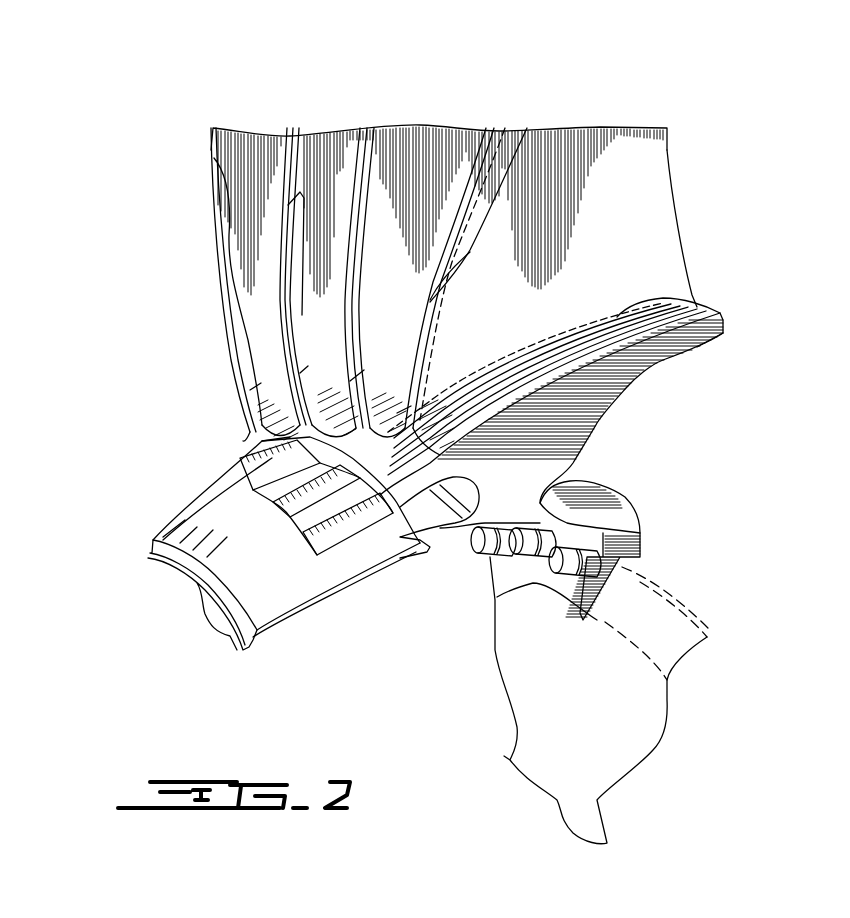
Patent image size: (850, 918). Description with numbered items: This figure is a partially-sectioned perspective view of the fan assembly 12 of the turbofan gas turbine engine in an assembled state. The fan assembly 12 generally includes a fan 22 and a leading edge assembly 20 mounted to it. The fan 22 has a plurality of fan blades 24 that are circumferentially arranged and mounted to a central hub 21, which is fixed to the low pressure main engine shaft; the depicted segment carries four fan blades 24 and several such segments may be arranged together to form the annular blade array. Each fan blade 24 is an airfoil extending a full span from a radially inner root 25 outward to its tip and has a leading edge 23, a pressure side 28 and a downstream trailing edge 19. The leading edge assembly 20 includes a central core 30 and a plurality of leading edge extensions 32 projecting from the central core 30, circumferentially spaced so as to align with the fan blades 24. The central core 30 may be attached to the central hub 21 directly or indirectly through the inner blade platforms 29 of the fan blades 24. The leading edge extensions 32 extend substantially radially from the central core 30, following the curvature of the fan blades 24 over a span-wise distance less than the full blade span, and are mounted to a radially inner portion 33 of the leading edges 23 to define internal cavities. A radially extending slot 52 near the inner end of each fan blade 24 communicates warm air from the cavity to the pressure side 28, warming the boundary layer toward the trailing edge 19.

The fan assembly 12 is at (158, 108).
The trailing edge 19 is at (672, 131).
The leading edge assembly 20 is at (205, 455).
The central hub 21 is at (688, 586).
The fan 22 is at (655, 409).
The leading edge 23 is at (367, 147).
The fan blades 24 is at (429, 140).
The root 25 is at (705, 318).
The pressure side 28 is at (622, 207).
The inner blade platforms 29 is at (540, 447).
The central core 30 is at (350, 537).
The leading edge extensions 32 is at (287, 327).
The radially inner portion 33 is at (373, 340).
The slot 52 is at (367, 272).